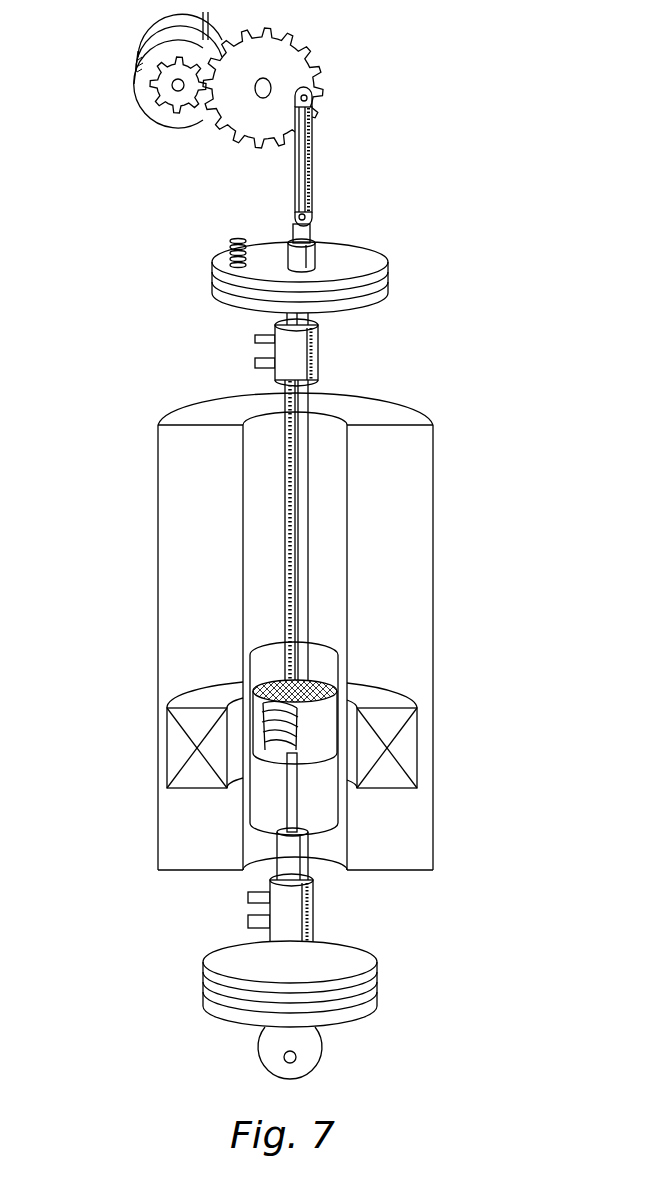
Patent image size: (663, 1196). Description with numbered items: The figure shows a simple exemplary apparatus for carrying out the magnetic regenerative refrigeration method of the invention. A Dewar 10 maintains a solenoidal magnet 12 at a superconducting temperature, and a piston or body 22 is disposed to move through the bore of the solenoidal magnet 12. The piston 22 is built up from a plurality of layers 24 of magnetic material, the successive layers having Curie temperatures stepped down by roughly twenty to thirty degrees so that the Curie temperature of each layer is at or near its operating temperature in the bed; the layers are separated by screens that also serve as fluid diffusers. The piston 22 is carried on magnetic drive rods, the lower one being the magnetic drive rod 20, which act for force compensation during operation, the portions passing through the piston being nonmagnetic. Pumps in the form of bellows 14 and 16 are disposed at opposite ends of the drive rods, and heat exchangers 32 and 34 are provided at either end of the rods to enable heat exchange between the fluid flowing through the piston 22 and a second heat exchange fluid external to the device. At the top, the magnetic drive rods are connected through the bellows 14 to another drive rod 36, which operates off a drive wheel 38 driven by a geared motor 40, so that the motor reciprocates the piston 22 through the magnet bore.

The Dewar 10 is at (425, 483).
The solenoidal magnet 12 is at (407, 752).
The bellows 14 is at (338, 250).
The bellows 16 is at (355, 958).
The magnetic drive rod 20 is at (308, 868).
The piston 22 is at (330, 742).
The layers 24 is at (277, 732).
The heat exchanger 32 is at (318, 350).
The heat exchanger 34 is at (315, 918).
The drive rod 36 is at (313, 157).
The drive wheel 38 is at (297, 52).
The geared motor 40 is at (148, 98).